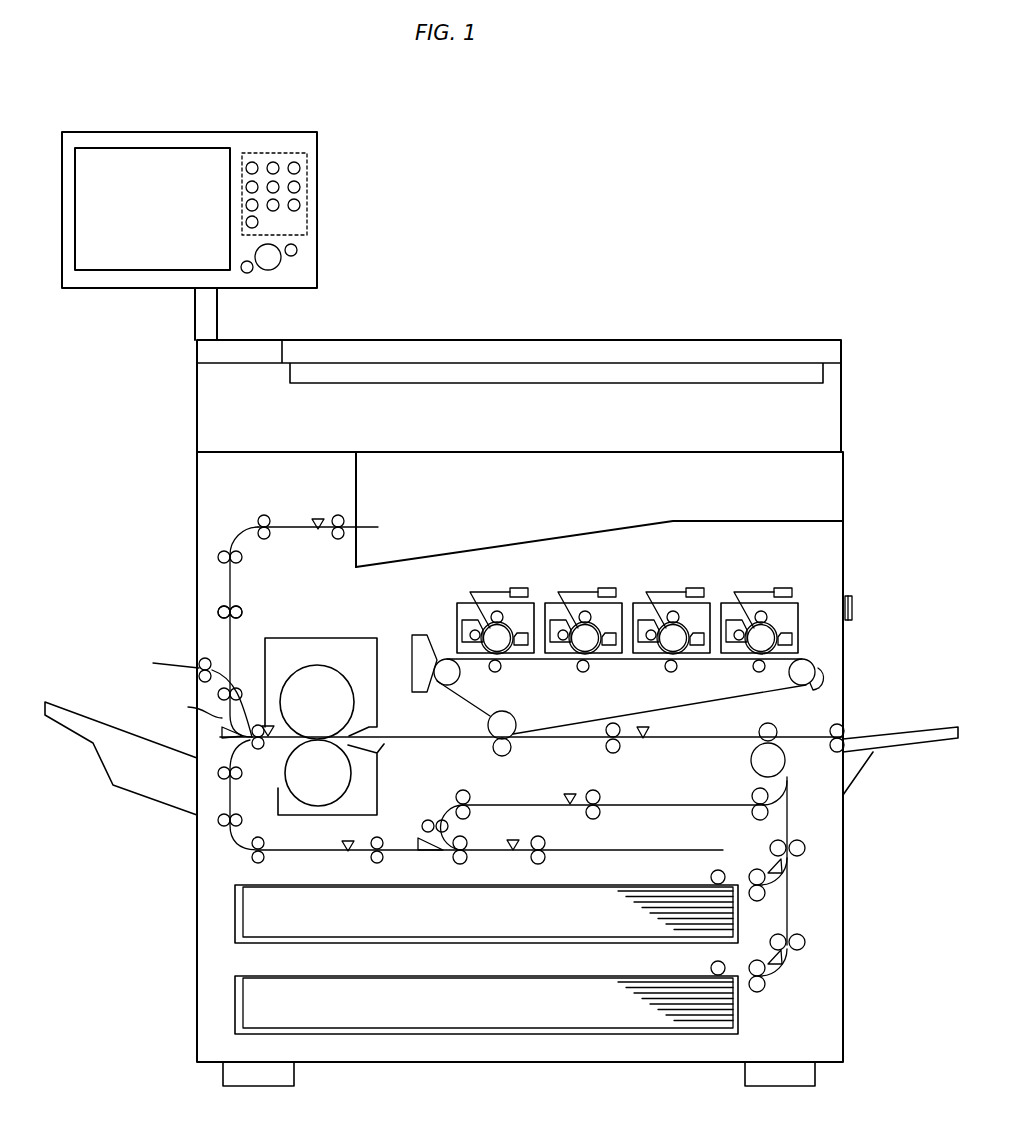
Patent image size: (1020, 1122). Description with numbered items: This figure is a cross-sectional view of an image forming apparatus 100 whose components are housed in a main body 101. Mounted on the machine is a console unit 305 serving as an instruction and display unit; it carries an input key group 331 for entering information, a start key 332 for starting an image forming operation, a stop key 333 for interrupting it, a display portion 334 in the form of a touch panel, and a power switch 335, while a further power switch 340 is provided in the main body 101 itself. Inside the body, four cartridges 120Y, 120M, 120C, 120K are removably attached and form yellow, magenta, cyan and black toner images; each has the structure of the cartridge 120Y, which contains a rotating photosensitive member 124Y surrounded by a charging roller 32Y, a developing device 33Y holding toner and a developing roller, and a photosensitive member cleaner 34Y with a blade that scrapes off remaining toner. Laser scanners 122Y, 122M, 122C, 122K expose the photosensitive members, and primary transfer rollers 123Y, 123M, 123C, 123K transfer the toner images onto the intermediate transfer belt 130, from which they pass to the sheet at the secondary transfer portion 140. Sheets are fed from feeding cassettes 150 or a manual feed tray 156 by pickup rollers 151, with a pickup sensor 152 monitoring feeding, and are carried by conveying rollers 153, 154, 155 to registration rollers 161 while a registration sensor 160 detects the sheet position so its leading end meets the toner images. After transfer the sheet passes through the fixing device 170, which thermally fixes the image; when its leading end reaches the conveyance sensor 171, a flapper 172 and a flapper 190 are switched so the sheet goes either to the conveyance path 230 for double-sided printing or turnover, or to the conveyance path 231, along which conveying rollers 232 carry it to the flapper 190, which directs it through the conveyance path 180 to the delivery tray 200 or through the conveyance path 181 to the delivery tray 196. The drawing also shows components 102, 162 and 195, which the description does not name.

The image forming apparatus 100 is at (615, 192).
The main body 101 is at (845, 562).
The image reading unit 102 is at (842, 400).
The console unit 305 is at (221, 208).
The input key group 331 is at (287, 152).
The start key 332 is at (277, 268).
The stop key 333 is at (298, 251).
The display portion 334 is at (113, 272).
The power switch 335 is at (247, 274).
The cartridge 120Y is at (486, 631).
The cartridge 120M is at (597, 618).
The cartridge 120C is at (689, 616).
The cartridge 120K is at (766, 630).
The laser scanner 122Y is at (519, 588).
The laser scanner 122M is at (607, 588).
The laser scanner 122C is at (695, 588).
The laser scanner 122K is at (786, 588).
The primary transfer roller 123Y is at (501, 671).
The primary transfer roller 123M is at (589, 671).
The primary transfer roller 123C is at (677, 671).
The primary transfer roller 123K is at (765, 673).
The charging roller 32Y is at (496, 610).
The developing device 33Y is at (462, 631).
The photosensitive member cleaner 34Y is at (525, 648).
The photosensitive member 124Y is at (489, 656).
The intermediate transfer belt 130 is at (582, 714).
The secondary transfer portion 140 is at (513, 750).
The feeding cassette 150 is at (455, 936).
The pickup roller 151 is at (711, 880).
The pickup sensor 152 is at (766, 868).
The conveying roller 153 is at (800, 952).
The conveying roller 154 is at (800, 858).
The conveying roller 155 is at (786, 762).
The manual feed tray 156 is at (935, 729).
The registration sensor 160 is at (655, 728).
The registration rollers 161 is at (622, 748).
The discharge roller 162 is at (262, 750).
The fixing device 170 is at (318, 664).
The conveyance sensor 171 is at (267, 724).
The flapper 172 is at (221, 733).
The conveyance path 180 is at (168, 663).
The conveyance path 181 is at (232, 640).
The flapper 190 is at (225, 668).
The conveyance roller 195 is at (316, 518).
The delivery tray 196 is at (442, 550).
The delivery tray 200 is at (137, 736).
The conveyance path 230 is at (228, 800).
The conveyance path 231 is at (186, 706).
The conveying rollers 232 is at (217, 693).
The power switch 340 is at (853, 610).